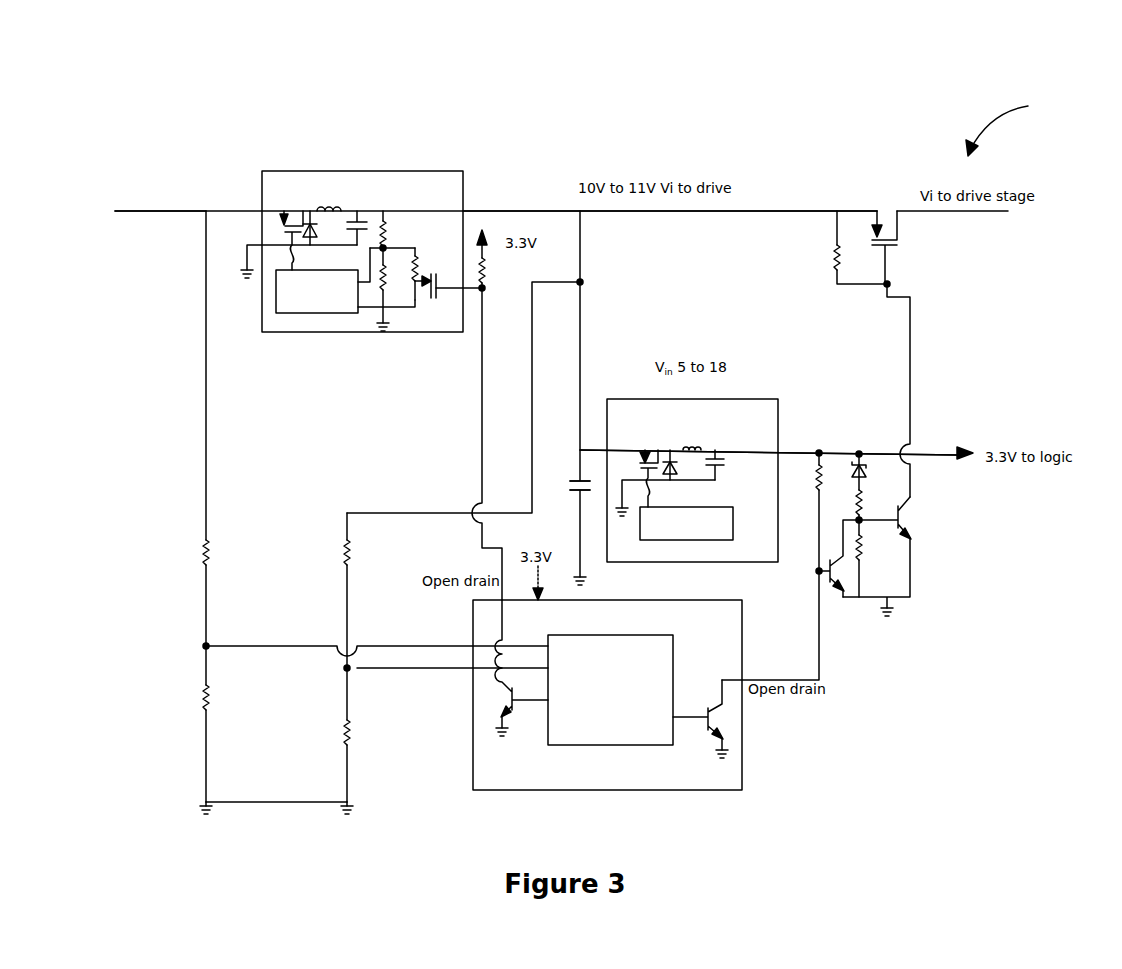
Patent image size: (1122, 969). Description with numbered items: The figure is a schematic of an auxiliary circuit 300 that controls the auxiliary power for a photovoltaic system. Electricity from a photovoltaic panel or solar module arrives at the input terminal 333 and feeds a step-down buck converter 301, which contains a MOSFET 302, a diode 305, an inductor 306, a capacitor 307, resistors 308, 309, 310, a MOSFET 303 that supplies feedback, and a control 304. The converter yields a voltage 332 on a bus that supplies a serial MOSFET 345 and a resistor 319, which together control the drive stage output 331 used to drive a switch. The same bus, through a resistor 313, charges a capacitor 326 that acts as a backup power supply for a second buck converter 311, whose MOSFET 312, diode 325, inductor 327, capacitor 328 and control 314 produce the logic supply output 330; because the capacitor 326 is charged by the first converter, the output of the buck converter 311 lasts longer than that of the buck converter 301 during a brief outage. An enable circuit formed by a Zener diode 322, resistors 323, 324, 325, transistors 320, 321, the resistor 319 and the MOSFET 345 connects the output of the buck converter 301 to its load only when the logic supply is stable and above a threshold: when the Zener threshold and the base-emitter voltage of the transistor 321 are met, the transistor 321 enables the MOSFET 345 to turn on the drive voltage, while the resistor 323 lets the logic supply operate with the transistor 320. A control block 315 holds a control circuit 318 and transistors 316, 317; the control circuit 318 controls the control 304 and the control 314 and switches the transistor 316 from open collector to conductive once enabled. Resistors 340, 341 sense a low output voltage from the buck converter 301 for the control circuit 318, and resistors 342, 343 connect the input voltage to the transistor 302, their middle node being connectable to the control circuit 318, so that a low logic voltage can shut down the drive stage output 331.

The auxiliary circuit 300 is at (1073, 92).
The buck converter 301 is at (414, 172).
The MOSFET 302 is at (284, 207).
The MOSFET 303 is at (422, 302).
The control 304 is at (288, 316).
The diode 305 is at (301, 205).
The inductor 306 is at (326, 196).
The capacitor 307 is at (368, 211).
The resistor 308 is at (398, 228).
The resistor 309 is at (380, 290).
The resistor 310 is at (411, 273).
The buck converter 311 is at (748, 400).
The MOSFET 312 is at (645, 448).
The resistor 313 is at (497, 275).
The control 314 is at (710, 541).
The control block 315 is at (680, 791).
The transistor 316 is at (724, 722).
The transistor 317 is at (498, 695).
The control circuit 318 is at (558, 744).
The resistor 319 is at (828, 263).
The transistor 320 is at (843, 602).
The transistor 321 is at (915, 518).
The Zener diode 322 is at (867, 470).
The resistor 323 is at (812, 468).
The resistor 324 is at (865, 498).
The resistor 325 is at (678, 477).
The capacitor 326 is at (573, 477).
The inductor 327 is at (714, 448).
The capacitor 328 is at (733, 462).
The 3.3V logic supply output 330 is at (953, 453).
The drive stage output 331 is at (962, 212).
The voltage 332 is at (779, 211).
The input terminal 333 is at (163, 213).
The resistor 340 is at (341, 543).
The resistor 341 is at (340, 732).
The resistor 342 is at (200, 690).
The resistor 343 is at (195, 553).
The MOSFET 345 is at (900, 237).